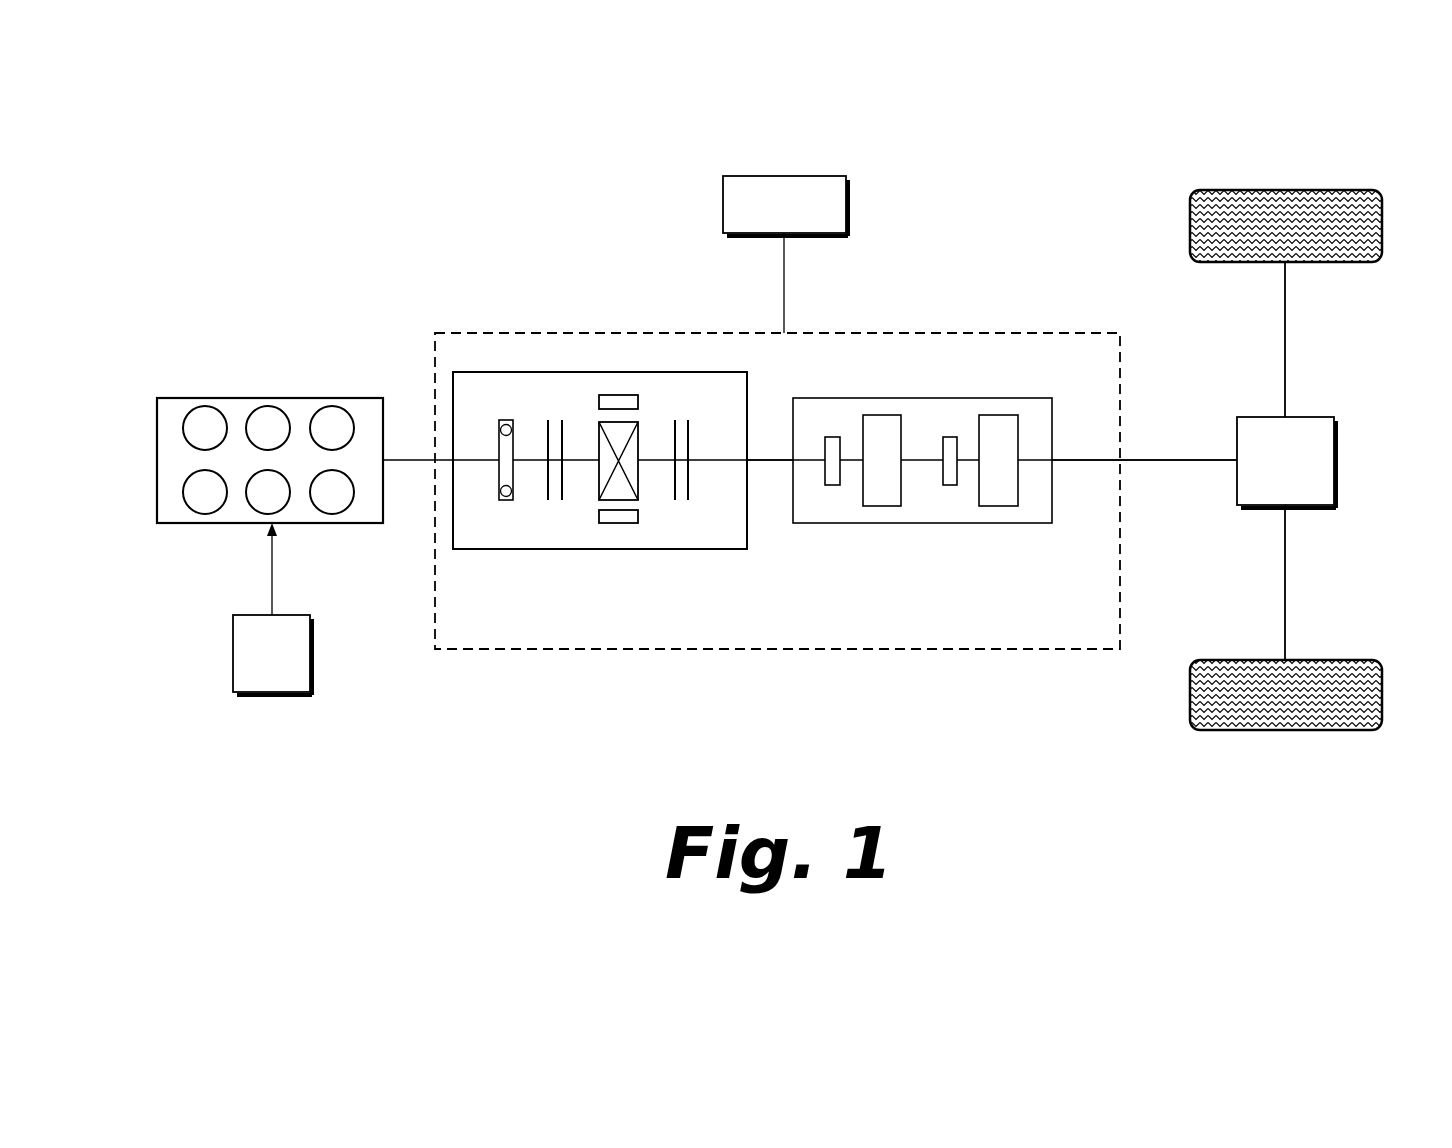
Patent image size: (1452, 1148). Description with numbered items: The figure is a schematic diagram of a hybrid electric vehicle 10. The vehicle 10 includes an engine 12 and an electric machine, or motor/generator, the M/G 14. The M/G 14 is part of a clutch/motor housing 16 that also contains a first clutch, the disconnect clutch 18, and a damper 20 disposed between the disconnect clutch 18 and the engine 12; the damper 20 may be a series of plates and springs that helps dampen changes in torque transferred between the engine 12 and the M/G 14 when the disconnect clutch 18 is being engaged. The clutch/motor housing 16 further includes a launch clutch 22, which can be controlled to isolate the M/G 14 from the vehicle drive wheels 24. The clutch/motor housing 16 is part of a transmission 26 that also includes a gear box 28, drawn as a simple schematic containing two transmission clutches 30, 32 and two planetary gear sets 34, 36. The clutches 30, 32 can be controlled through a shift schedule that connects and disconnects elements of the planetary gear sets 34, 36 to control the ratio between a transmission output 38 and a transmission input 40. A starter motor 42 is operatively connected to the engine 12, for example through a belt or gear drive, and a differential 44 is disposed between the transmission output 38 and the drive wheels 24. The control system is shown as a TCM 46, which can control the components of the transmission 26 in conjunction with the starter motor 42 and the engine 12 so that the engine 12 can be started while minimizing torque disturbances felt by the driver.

The vehicle 10 is at (430, 170).
The engine 12 is at (197, 396).
The electric machine (motor/generator, M/G) 14 is at (623, 535).
The clutch/motor housing 16 is at (565, 362).
The disconnect clutch (first clutch) 18 is at (548, 482).
The damper 20 is at (499, 477).
The launch clutch 22 is at (688, 482).
The vehicle drive wheels 24 is at (1332, 182).
The transmission 26 is at (690, 650).
The gear box 28 is at (1028, 398).
The transmission clutch 30 is at (831, 485).
The transmission clutch 32 is at (950, 485).
The planetary gear set 34 is at (883, 415).
The planetary gear set 36 is at (1000, 415).
The transmission output 38 is at (1168, 462).
The transmission input 40 is at (763, 458).
The starter motor 42 is at (284, 694).
The differential 44 is at (1337, 452).
The TCM (transmission control module) 46 is at (850, 196).